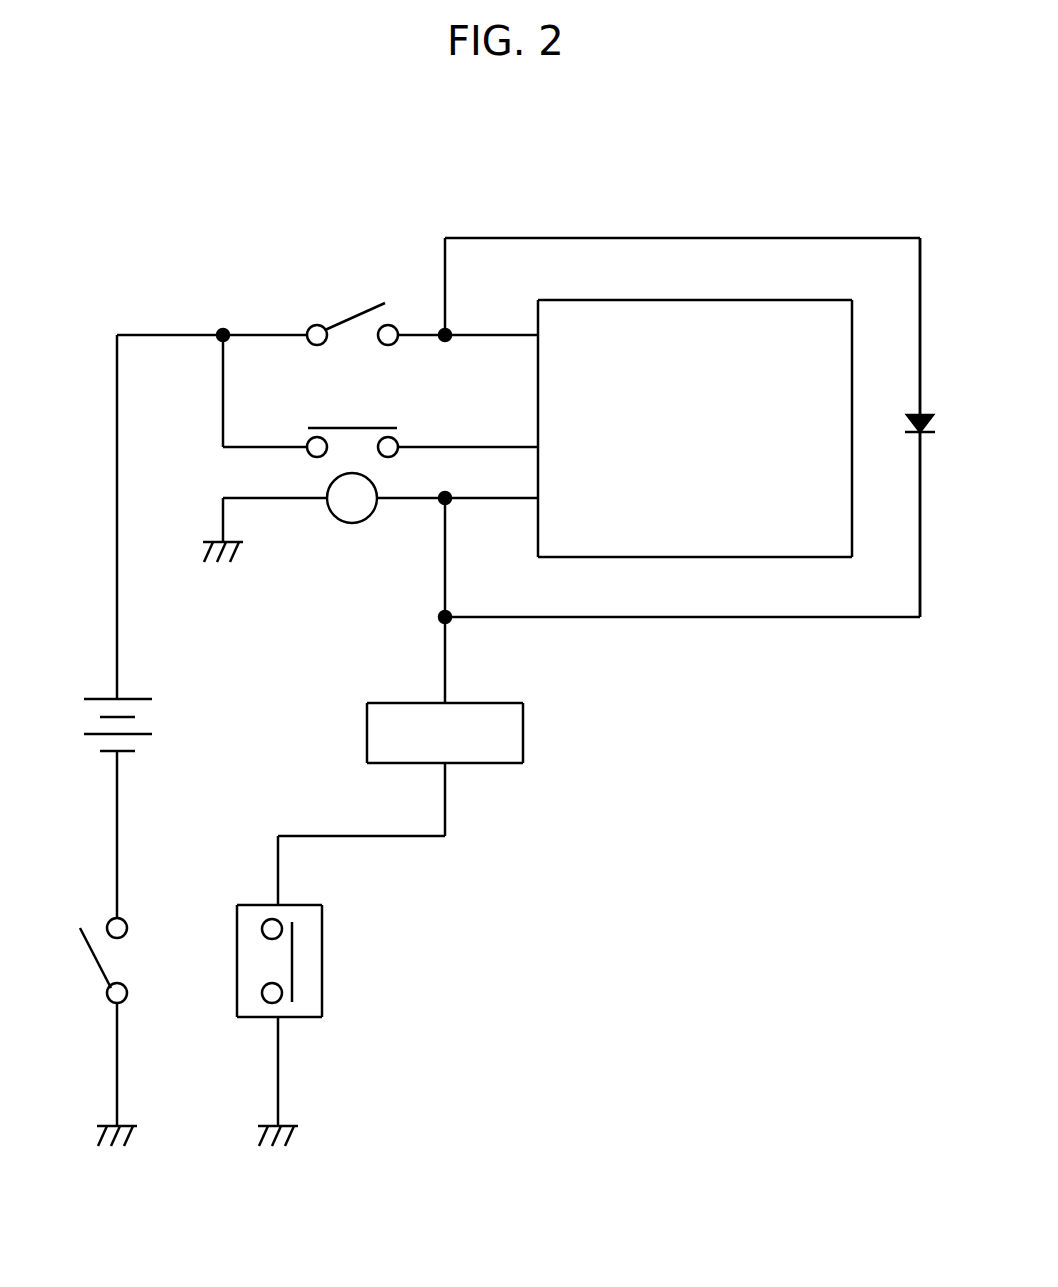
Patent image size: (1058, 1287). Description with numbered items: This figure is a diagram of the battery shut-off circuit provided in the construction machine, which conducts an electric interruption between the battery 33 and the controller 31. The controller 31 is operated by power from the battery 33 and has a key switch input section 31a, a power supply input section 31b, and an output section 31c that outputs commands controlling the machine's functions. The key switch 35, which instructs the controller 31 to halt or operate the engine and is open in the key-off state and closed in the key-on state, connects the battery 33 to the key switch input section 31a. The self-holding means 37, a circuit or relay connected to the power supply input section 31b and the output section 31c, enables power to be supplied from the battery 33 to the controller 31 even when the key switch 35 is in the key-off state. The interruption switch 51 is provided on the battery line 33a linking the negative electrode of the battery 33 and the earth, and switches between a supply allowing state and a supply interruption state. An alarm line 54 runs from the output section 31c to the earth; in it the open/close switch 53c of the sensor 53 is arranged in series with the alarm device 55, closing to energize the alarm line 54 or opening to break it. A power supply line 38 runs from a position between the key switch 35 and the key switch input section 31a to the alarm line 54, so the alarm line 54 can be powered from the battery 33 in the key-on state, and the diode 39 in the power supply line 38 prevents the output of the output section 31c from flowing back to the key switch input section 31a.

The controller 31 is at (828, 300).
The key switch input section 31a is at (538, 333).
The power supply input section 31b is at (538, 445).
The output section 31c is at (538, 496).
The battery 33 is at (88, 698).
The battery line 33a is at (117, 513).
The key switch 35 is at (353, 313).
The self-holding means 37 is at (372, 417).
The power supply line 38 is at (840, 620).
The diode 39 is at (922, 418).
The interruption switch 51 is at (92, 963).
The sensor 53 is at (325, 963).
The open/close switch 53c is at (245, 958).
The alarm line 54 is at (447, 800).
The alarm device 55 is at (524, 735).